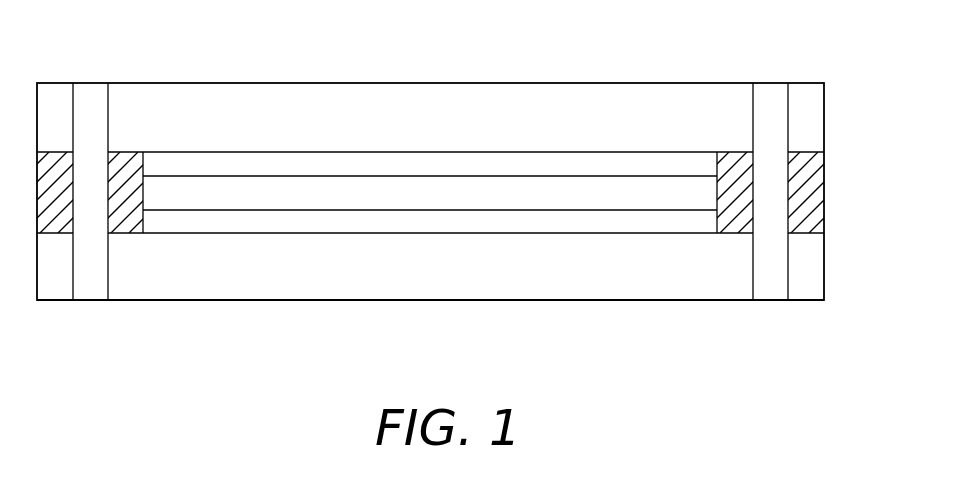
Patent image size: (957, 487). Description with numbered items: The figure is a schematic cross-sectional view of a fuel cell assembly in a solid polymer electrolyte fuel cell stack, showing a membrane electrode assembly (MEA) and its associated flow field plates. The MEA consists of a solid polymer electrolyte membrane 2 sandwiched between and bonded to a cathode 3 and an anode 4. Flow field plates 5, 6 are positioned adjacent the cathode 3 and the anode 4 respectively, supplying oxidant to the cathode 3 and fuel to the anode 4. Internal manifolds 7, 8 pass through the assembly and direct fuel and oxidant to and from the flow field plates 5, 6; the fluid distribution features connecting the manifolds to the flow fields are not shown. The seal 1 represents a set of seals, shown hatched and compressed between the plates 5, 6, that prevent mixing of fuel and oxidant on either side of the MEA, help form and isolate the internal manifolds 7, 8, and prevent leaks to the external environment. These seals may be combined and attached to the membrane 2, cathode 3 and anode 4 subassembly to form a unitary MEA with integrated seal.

The seal 1 is at (127, 163).
The solid polymer electrolyte membrane 2 is at (465, 193).
The cathode 3 is at (567, 162).
The anode 4 is at (605, 218).
The flow field plate 5 is at (427, 112).
The flow field plate 6 is at (703, 278).
The internal manifold 7 is at (96, 92).
The internal manifold 8 is at (768, 92).